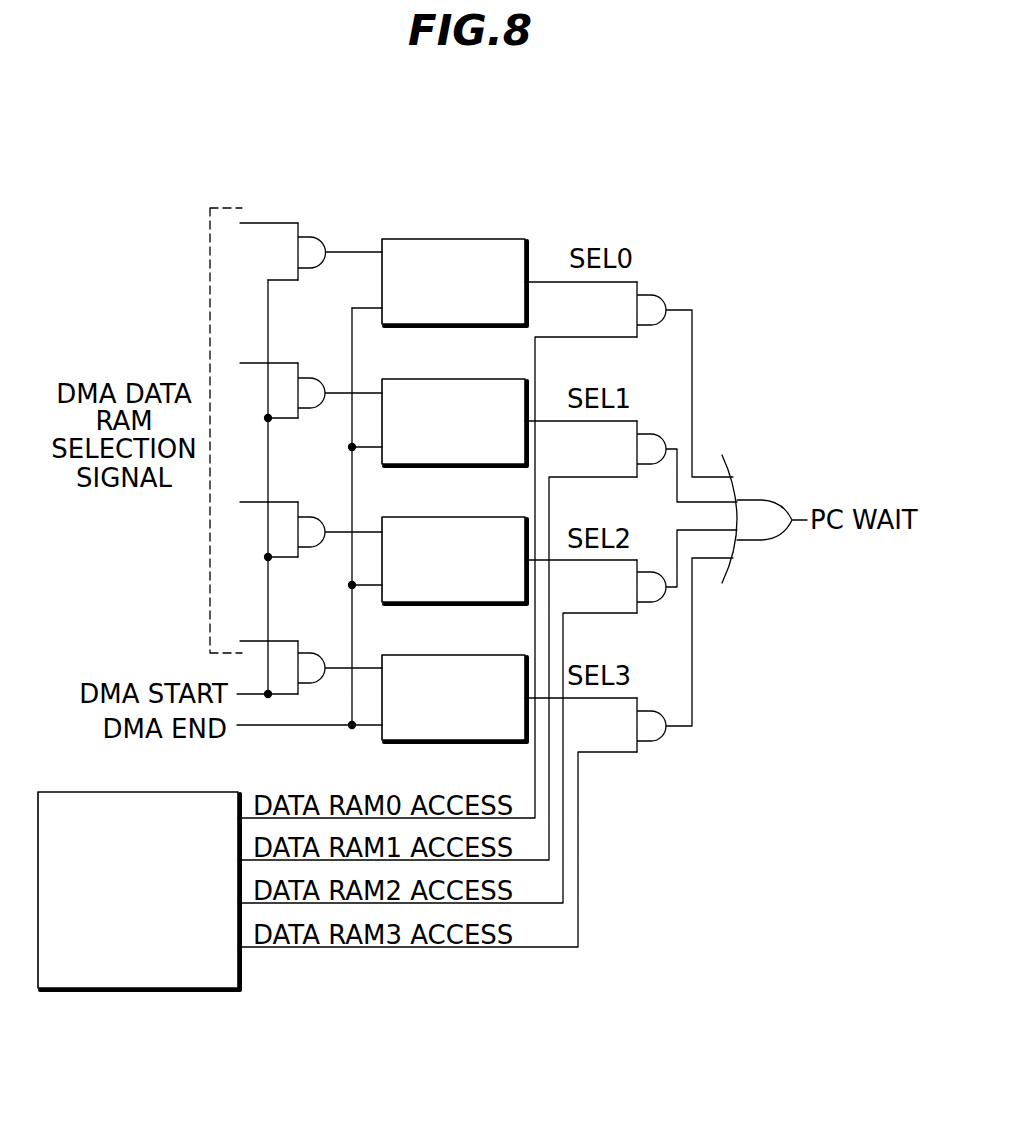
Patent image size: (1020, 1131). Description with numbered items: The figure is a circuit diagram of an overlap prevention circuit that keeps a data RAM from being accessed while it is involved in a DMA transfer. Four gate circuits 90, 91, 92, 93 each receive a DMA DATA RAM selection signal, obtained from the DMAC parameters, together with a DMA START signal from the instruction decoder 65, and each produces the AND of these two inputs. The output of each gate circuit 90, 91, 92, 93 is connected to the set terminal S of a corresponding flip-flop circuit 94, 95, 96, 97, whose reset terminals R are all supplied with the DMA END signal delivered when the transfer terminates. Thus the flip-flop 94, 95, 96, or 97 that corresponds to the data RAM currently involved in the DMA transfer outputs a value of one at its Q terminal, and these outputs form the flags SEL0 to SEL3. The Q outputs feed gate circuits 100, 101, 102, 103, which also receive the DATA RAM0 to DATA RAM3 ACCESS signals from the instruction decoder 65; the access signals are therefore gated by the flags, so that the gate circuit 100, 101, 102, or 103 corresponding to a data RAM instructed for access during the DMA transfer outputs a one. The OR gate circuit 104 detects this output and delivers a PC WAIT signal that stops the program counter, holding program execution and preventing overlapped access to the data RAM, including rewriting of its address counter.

The instruction decoder 65 is at (210, 792).
The gate circuit 90 is at (307, 238).
The gate circuit 91 is at (307, 378).
The gate circuit 92 is at (307, 517).
The gate circuit 93 is at (307, 653).
The flip-flop circuit 94 is at (430, 239).
The flip-flop circuit 95 is at (430, 379).
The flip-flop circuit 96 is at (430, 517).
The flip-flop circuit 97 is at (430, 655).
The gate circuit 100 is at (645, 295).
The gate circuit 101 is at (645, 434).
The gate circuit 102 is at (645, 602).
The gate circuit 103 is at (645, 741).
The OR gate circuit 104 is at (767, 498).